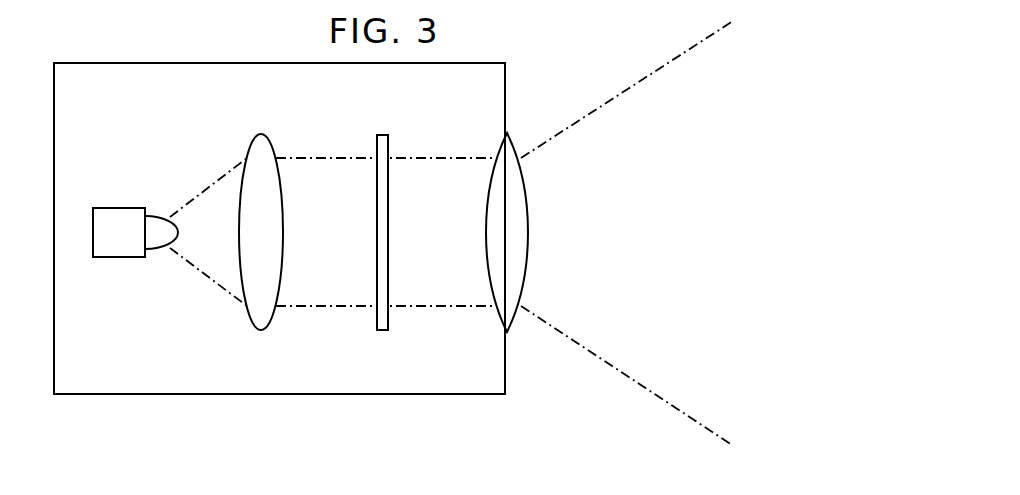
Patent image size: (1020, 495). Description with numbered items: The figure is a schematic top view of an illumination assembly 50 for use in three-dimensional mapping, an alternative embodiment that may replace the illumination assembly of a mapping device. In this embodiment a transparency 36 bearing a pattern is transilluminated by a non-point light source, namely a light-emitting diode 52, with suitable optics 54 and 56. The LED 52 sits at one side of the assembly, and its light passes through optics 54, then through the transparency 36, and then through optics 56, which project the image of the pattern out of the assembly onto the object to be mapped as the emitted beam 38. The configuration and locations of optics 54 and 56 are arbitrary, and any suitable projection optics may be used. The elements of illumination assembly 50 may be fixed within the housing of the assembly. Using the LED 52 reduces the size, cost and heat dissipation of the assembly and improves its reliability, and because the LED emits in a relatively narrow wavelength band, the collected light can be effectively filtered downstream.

The illumination assembly 50 is at (139, 63).
The light-emitting diode 52 is at (122, 208).
The optics 54 is at (247, 148).
The transparency 36 is at (376, 143).
The optics 56 is at (496, 147).
The light beam 38 is at (592, 112).